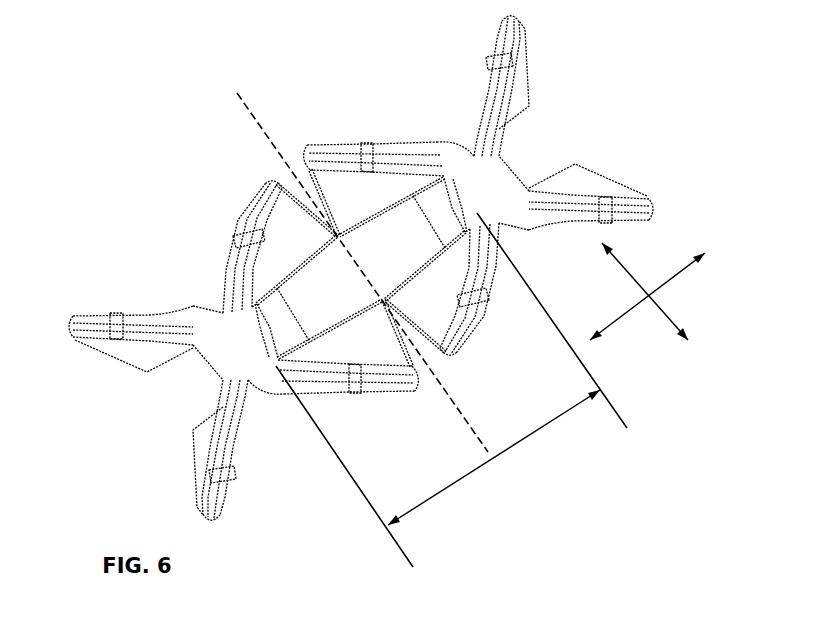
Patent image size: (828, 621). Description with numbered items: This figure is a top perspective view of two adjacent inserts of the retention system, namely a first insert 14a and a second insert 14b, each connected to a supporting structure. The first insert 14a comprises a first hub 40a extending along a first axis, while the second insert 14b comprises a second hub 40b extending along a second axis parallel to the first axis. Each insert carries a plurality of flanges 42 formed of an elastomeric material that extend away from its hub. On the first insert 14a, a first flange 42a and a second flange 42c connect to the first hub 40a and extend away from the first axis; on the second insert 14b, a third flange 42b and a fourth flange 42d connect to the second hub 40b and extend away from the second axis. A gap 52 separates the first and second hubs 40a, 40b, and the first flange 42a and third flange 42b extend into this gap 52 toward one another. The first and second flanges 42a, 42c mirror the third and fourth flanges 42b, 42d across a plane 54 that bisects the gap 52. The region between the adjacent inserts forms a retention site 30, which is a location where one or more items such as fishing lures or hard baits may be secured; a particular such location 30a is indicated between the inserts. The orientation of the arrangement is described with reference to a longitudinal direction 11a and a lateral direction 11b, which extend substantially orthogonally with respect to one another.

The first insert 14a is at (243, 324).
The second insert 14b is at (478, 177).
The first hub 40a is at (219, 366).
The second hub 40b is at (482, 188).
The flange 42 is at (521, 61).
The first flange 42a is at (354, 352).
The third flange 42b is at (417, 315).
The second flange 42c is at (277, 252).
The fourth flange 42d is at (355, 200).
The retention site 30 is at (296, 160).
The axis end 30a is at (157, 7).
The gap 52 is at (470, 475).
The plane 54 is at (462, 411).
The longitudinal direction 11a is at (624, 268).
The lateral direction 11b is at (667, 285).